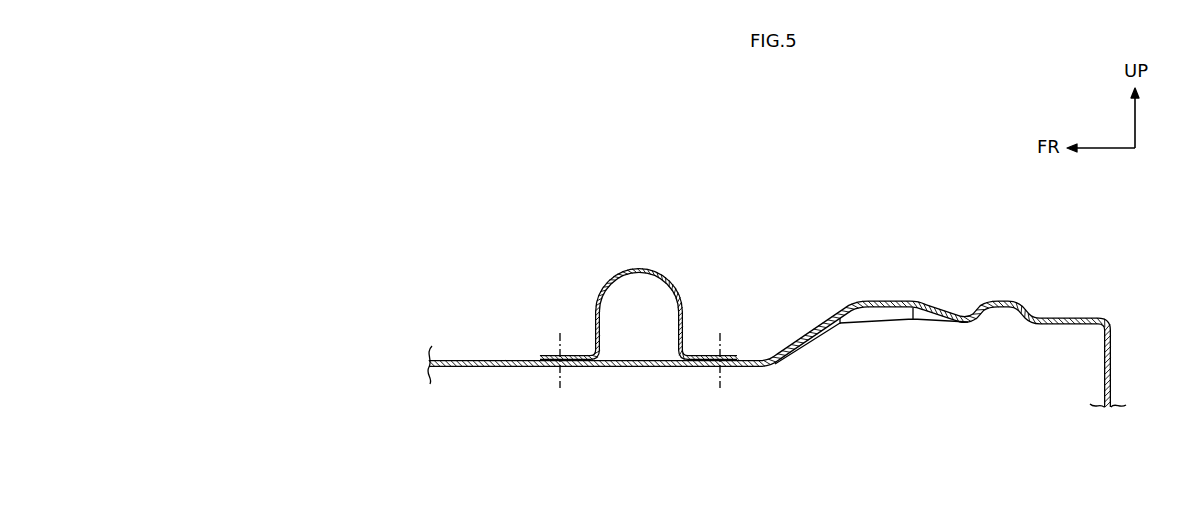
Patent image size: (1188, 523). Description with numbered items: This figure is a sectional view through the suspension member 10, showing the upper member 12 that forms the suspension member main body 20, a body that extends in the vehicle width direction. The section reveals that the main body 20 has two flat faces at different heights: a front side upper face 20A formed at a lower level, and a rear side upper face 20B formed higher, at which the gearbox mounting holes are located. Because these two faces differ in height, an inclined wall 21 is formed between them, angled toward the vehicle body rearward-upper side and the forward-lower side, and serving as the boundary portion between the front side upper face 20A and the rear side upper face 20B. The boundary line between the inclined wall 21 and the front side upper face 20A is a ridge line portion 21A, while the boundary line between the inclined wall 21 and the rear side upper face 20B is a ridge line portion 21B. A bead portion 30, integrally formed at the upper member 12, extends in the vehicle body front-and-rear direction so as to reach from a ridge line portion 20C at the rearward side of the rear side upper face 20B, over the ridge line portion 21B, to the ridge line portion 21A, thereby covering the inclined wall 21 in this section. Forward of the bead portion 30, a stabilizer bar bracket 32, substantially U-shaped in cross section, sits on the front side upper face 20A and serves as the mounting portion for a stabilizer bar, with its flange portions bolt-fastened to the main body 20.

The suspension member 10 is at (777, 291).
The upper member 12 is at (455, 360).
The suspension member main body 20 is at (1085, 311).
The front side upper face 20A is at (517, 356).
The rear side upper face 20B is at (925, 303).
The ridge line portion 20C is at (971, 313).
The inclined wall 21 is at (809, 338).
The ridge line portion 21A is at (770, 357).
The ridge line portion 21B is at (836, 316).
The bead portion 30 is at (890, 302).
The stabilizer bar bracket 32 is at (645, 268).